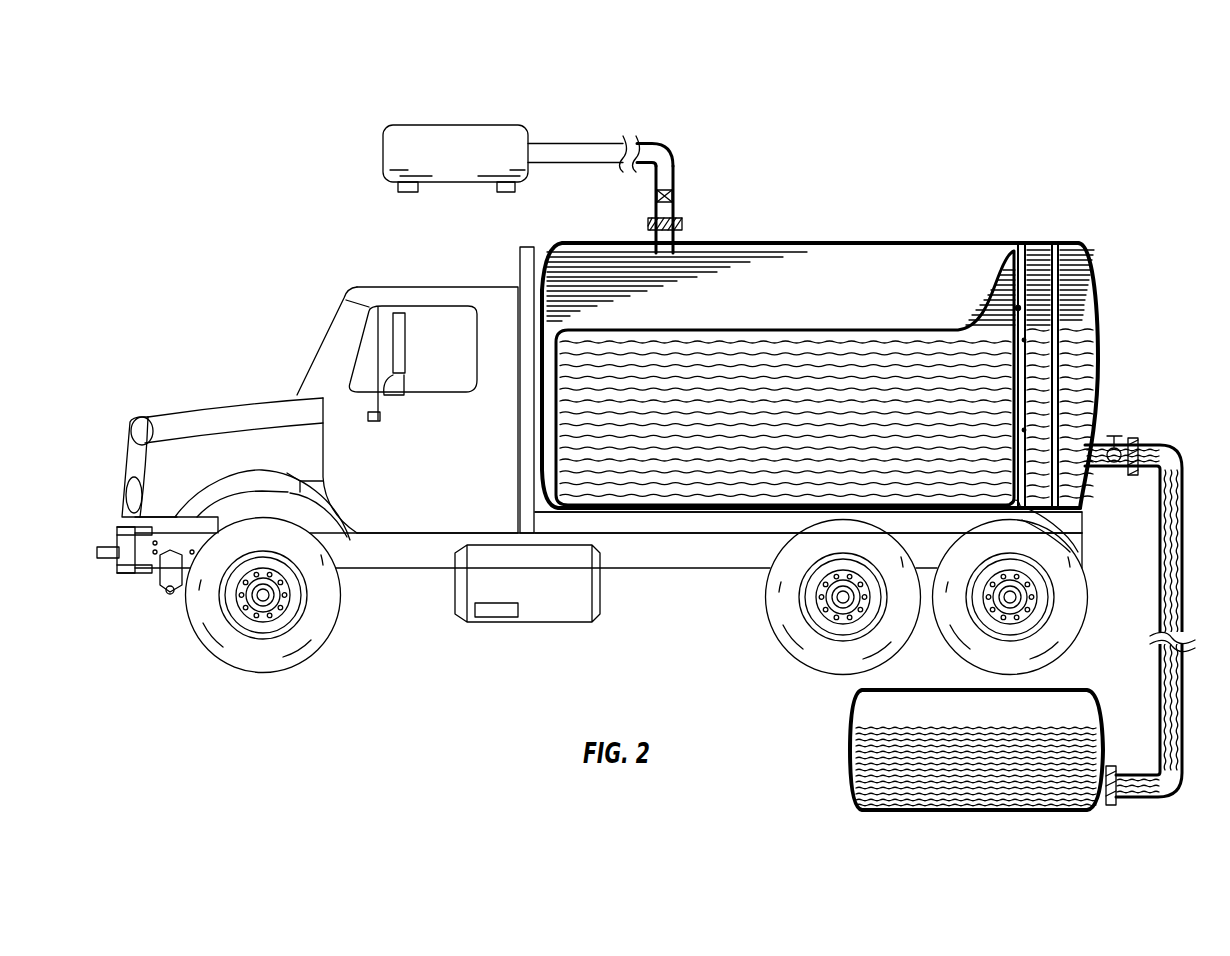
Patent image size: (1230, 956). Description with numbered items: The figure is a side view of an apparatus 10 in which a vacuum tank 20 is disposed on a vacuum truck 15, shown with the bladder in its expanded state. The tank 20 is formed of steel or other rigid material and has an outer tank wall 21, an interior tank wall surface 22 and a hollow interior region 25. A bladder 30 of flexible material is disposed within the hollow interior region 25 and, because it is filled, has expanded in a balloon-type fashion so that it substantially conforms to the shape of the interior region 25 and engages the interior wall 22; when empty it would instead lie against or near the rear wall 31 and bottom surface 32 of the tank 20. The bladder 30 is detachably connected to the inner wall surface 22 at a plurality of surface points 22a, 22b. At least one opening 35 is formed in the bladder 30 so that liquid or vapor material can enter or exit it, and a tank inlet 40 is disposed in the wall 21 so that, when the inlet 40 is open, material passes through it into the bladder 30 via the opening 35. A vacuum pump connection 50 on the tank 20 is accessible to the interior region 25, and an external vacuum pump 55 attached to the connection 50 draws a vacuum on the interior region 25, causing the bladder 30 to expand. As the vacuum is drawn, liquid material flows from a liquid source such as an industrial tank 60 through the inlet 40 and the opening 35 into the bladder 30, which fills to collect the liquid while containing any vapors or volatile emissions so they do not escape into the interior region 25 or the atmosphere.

The apparatus 10 is at (199, 104).
The vacuum truck 15 is at (237, 398).
The vacuum tank 20 is at (860, 242).
The outer tank wall 21 is at (1100, 348).
The interior tank wall surface 22 is at (553, 297).
The surface point 22a is at (1016, 248).
The surface point 22b is at (1078, 552).
The hollow interior region 25 is at (787, 304).
The bladder 30 is at (907, 326).
The rear wall 31 is at (1056, 253).
The bottom surface 32 is at (690, 500).
The opening 35 is at (1018, 307).
The tank inlet 40 is at (1107, 468).
The vacuum pump connection 50 is at (683, 225).
The vacuum pump 55 is at (456, 125).
The industrial tank 60 is at (988, 724).